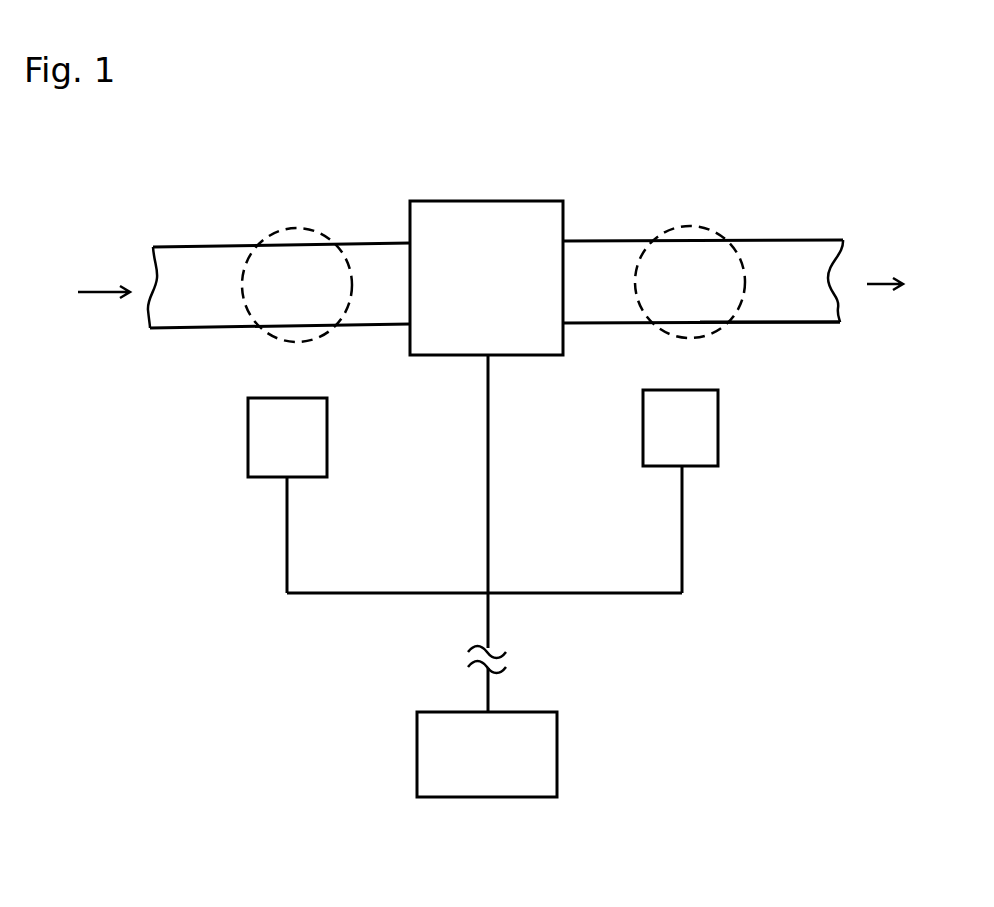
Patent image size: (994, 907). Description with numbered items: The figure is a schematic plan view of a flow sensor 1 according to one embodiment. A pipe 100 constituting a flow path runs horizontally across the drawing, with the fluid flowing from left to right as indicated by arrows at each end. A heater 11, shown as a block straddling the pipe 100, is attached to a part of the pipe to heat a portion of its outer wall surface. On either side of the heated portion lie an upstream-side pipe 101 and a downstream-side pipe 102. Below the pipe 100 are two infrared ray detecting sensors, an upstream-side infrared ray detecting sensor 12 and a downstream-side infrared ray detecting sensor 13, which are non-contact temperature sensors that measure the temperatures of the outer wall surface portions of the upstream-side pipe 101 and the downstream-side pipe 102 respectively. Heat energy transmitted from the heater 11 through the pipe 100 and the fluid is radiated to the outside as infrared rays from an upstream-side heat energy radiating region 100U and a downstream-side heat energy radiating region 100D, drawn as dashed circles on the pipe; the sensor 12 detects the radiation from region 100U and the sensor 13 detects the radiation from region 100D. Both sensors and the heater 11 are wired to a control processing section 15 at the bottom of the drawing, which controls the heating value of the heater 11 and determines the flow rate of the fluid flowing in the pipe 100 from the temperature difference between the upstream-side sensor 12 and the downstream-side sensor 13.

The flow sensor 1 is at (528, 130).
The heater 11 is at (538, 200).
The upstream-side infrared ray detecting sensor 12 is at (275, 477).
The downstream-side infrared ray detecting sensor 13 is at (710, 466).
The control processing section 15 is at (557, 753).
The pipe 100 is at (793, 236).
The upstream-side heat energy radiating region 100U is at (305, 230).
The downstream-side heat energy radiating region 100D is at (695, 227).
The upstream-side pipe 101 is at (228, 257).
The downstream-side pipe 102 is at (773, 305).